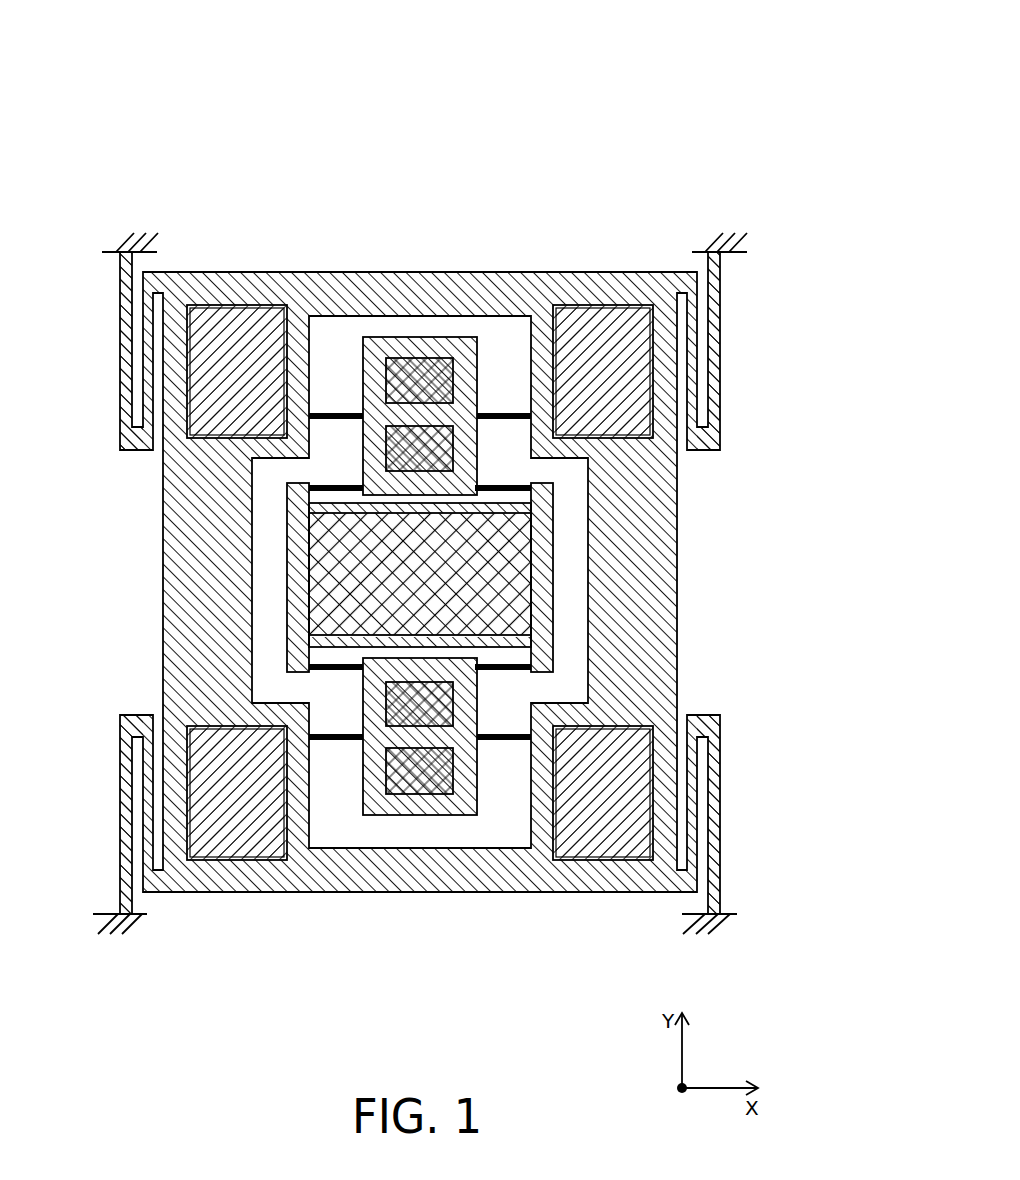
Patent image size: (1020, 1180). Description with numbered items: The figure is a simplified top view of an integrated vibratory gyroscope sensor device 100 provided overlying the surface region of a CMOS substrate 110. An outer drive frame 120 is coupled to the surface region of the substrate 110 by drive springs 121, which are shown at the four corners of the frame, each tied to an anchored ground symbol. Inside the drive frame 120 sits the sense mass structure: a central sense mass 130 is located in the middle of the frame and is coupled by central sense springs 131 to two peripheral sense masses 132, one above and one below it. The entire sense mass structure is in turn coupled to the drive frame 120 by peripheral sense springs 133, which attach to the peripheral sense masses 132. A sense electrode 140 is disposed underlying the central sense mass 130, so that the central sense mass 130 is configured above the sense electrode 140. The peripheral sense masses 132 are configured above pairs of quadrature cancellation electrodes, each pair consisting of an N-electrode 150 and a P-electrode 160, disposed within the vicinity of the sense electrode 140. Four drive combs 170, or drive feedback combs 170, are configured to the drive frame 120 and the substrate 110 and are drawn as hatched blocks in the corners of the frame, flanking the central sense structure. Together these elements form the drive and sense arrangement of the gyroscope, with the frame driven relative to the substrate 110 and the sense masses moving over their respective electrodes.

The integrated vibratory gyroscope sensor device 100 is at (397, 61).
The CMOS substrate 110 is at (440, 205).
The drive frame 120 is at (478, 272).
The drive spring 121 is at (118, 367).
The sense mass 130 is at (553, 547).
The sense spring 131 is at (330, 486).
The peripheral sense mass 132 is at (397, 337).
The peripheral sense spring 133 is at (309, 414).
The sense electrode 140 is at (531, 572).
The N-electrode 150 is at (453, 382).
The P-electrode 160 is at (453, 460).
The drive comb 170 is at (216, 307).